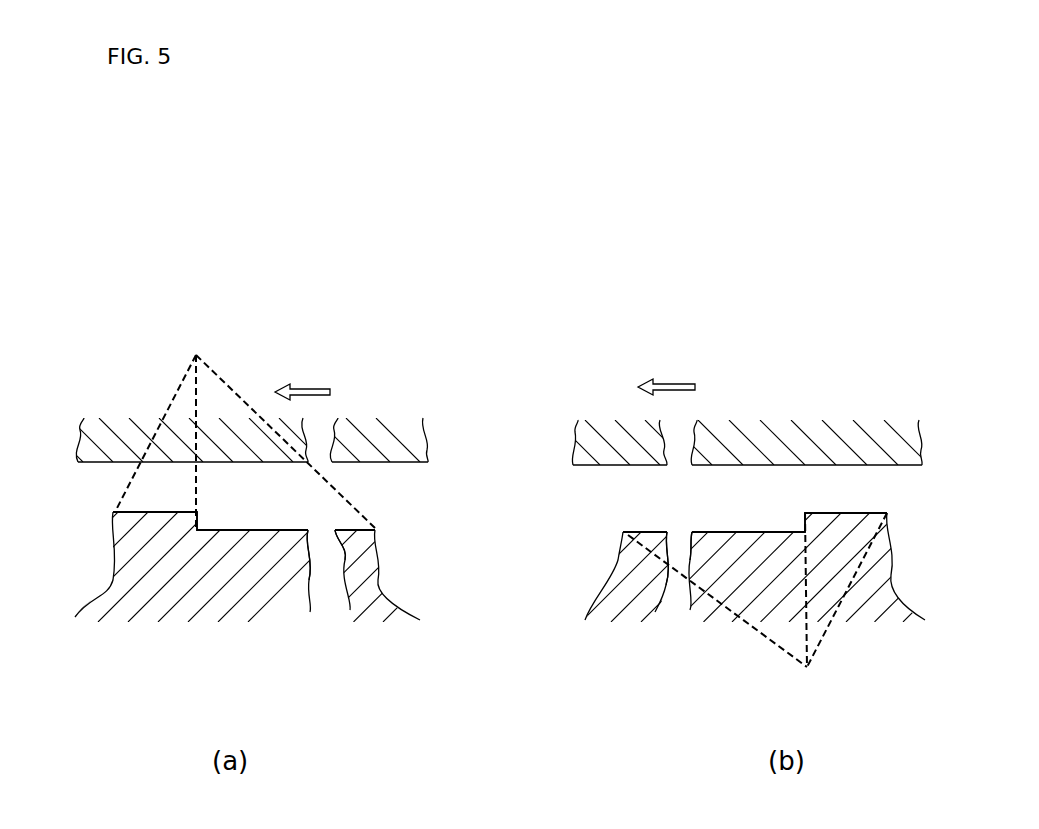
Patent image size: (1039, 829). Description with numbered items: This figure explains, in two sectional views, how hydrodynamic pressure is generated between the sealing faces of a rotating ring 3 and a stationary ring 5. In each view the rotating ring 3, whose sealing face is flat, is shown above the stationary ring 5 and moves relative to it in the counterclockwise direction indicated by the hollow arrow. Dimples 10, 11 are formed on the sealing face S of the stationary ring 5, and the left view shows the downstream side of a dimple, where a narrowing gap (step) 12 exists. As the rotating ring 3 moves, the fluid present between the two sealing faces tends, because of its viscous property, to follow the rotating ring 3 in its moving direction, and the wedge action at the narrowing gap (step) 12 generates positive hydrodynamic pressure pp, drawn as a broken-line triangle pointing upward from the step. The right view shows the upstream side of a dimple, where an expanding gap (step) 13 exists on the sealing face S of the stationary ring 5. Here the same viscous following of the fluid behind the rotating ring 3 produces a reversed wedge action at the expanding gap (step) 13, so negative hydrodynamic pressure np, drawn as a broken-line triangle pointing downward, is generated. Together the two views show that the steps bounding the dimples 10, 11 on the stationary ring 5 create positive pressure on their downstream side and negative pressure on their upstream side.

The rotating ring 3 is at (112, 418).
The stationary ring 5 is at (204, 620).
The dimple 10 is at (384, 530).
The dimple 11 is at (308, 524).
The narrowing gap (step) 12 is at (200, 516).
The expanding gap (step) 13 is at (805, 513).
The sealing face S is at (155, 508).
The positive hydrodynamic pressure pp is at (245, 425).
The negative hydrodynamic pressure np is at (757, 615).